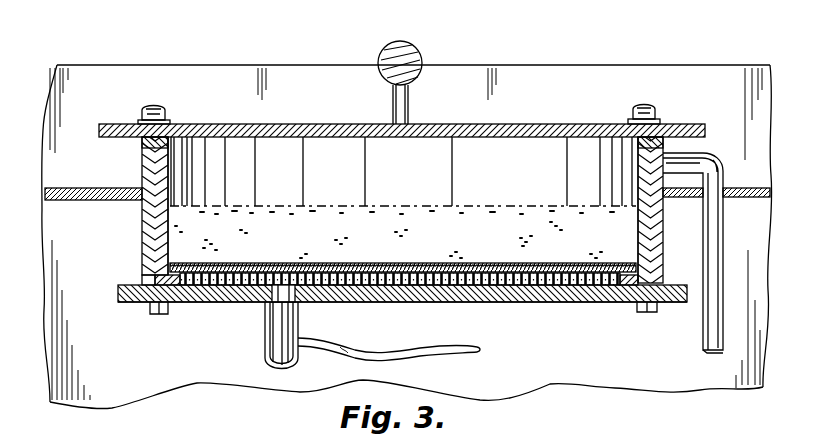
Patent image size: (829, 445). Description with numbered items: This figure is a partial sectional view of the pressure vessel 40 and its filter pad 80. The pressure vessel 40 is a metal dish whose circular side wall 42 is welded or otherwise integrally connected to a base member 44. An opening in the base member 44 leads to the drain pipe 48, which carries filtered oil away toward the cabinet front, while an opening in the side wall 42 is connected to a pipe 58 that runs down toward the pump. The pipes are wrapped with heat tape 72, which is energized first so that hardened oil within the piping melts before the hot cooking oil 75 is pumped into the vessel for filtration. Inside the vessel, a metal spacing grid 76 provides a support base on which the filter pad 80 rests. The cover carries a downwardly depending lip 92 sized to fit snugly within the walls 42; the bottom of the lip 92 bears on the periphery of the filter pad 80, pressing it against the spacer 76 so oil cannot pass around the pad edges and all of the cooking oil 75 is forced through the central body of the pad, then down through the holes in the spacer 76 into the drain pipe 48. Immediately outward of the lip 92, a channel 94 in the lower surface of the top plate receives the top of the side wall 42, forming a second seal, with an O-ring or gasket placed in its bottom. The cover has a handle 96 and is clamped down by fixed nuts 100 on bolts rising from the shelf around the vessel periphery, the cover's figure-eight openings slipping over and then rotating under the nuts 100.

The pressure vessel 40 is at (449, 173).
The side wall 42 is at (142, 174).
The base member 44 is at (215, 303).
The drain pipe 48 is at (298, 328).
The pipe 58 is at (723, 248).
The heat tape 72 is at (476, 353).
The cooking oil 75 is at (480, 240).
The spacing grid 76 is at (567, 285).
The filter pad 80 is at (422, 283).
The lip 92 is at (168, 187).
The channel 94 is at (173, 123).
The handle 96 is at (423, 57).
The fixed nuts 100 is at (156, 104).